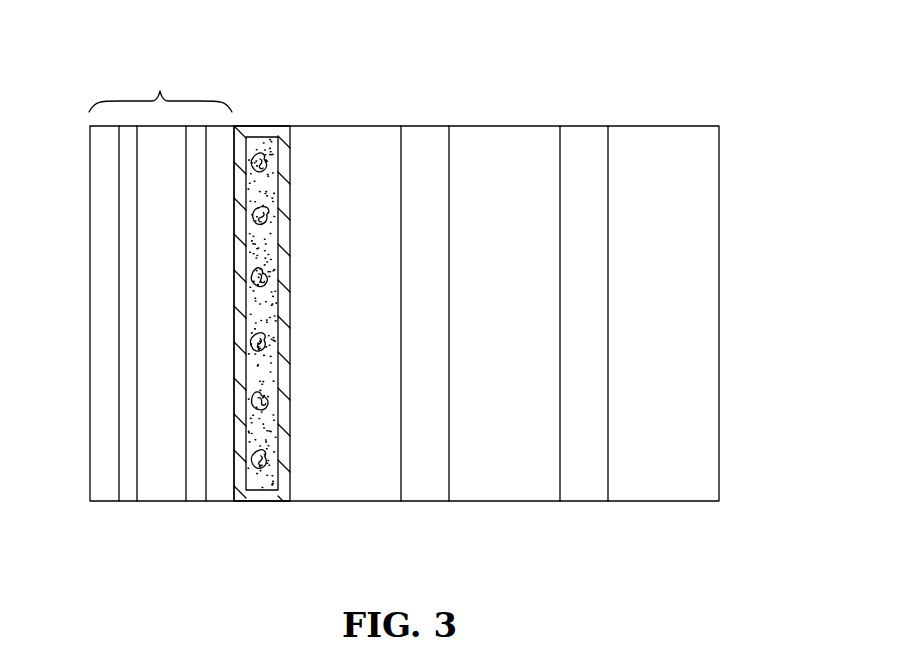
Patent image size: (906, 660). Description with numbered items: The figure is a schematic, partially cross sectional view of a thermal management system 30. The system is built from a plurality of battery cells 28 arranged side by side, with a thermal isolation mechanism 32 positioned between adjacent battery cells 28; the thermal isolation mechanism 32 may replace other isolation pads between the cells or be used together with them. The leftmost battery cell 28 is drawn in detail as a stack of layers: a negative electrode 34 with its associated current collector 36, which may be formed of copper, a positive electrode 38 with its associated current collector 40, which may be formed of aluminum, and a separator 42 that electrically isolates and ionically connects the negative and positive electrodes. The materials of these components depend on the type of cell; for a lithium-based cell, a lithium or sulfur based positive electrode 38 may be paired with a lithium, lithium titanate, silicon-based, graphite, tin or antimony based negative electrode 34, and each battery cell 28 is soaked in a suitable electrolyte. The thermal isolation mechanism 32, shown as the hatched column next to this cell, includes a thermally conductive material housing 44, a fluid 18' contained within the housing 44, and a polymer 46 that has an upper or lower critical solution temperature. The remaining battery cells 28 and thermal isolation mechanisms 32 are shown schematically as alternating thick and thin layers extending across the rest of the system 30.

The fluid 18' is at (146, 311).
The battery cell 28 is at (661, 157).
The thermal management system 30 is at (728, 143).
The thermal isolation mechanism 32 is at (259, 124).
The negative electrode 34 is at (128, 488).
The current collector 36 is at (105, 475).
The positive electrode 38 is at (196, 487).
The current collector 40 is at (221, 486).
The separator 42 is at (156, 486).
The thermally conductive material housing 44 is at (283, 444).
The polymer 46 is at (253, 407).